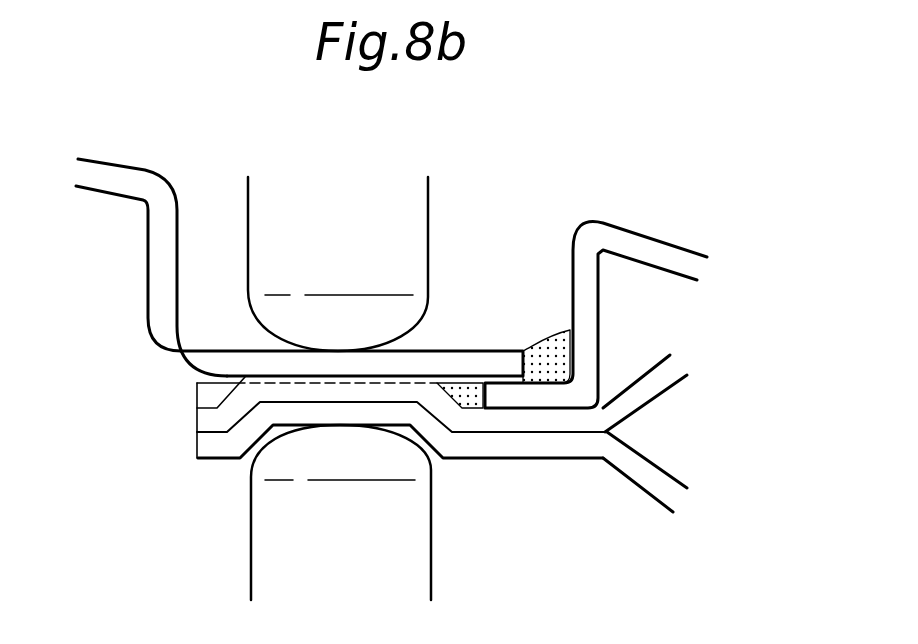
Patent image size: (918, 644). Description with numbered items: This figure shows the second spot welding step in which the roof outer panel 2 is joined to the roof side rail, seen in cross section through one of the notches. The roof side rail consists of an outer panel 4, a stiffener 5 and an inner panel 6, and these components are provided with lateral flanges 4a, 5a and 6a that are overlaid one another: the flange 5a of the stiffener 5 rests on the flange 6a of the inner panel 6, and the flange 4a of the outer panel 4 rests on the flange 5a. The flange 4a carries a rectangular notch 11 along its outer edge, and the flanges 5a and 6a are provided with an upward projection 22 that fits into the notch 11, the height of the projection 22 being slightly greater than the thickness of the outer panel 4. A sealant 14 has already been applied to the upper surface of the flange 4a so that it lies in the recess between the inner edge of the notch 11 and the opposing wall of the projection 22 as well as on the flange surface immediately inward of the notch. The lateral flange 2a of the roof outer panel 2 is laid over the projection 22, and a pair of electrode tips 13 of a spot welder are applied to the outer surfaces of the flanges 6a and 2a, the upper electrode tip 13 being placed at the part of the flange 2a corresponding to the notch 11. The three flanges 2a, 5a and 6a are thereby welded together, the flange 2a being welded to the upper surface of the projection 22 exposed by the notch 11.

The roof outer panel 2 is at (115, 175).
The lateral flange of roof outer panel 2a is at (455, 360).
The outer panel 4 is at (660, 248).
The lateral flange of outer panel 4a is at (209, 400).
The stiffener 5 is at (655, 378).
The lateral flange of stiffener 5a is at (203, 423).
The inner panel 6 is at (647, 483).
The lateral flange of inner panel 6a is at (213, 445).
The rectangular notch 11 is at (467, 390).
The electrode tip 13 is at (408, 203).
The sealant 14 is at (547, 343).
The upward projection 22 is at (273, 380).